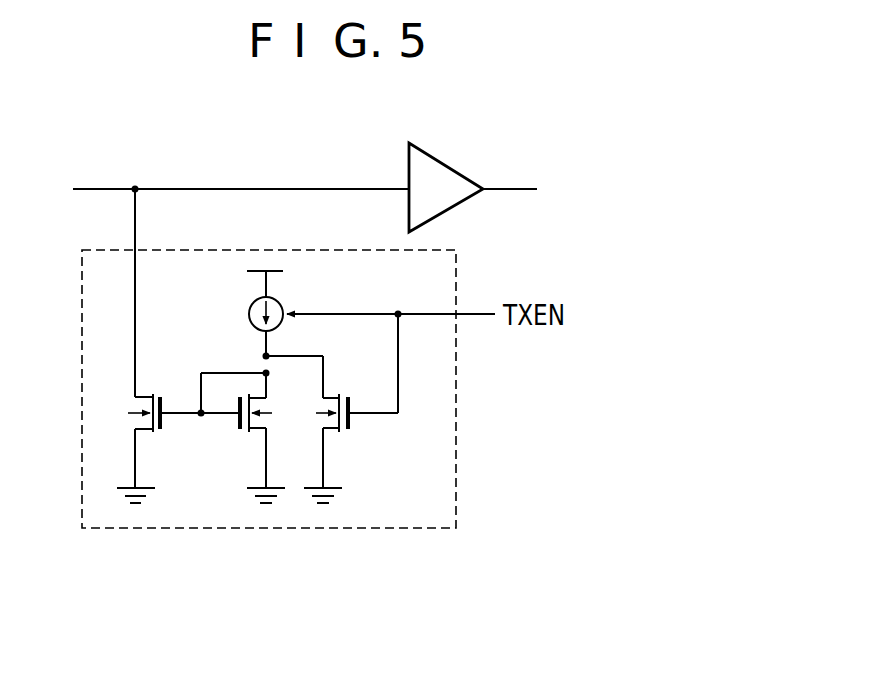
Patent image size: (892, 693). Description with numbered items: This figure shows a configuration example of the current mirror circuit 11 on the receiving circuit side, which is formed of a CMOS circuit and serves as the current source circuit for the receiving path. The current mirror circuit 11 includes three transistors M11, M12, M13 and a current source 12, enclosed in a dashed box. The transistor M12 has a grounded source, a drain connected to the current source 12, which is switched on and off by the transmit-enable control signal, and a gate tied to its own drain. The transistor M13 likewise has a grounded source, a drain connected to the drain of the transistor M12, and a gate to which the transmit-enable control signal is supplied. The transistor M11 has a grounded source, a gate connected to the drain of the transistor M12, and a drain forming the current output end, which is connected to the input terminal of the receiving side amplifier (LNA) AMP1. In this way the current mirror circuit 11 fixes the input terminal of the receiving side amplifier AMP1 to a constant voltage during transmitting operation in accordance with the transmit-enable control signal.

The receiving side amplifier (LNA) AMP1 is at (442, 157).
The current source 12 is at (281, 301).
The transistor M11 is at (160, 390).
The transistor M12 is at (243, 434).
The transistor M13 is at (346, 434).
The current mirror circuit 11 is at (351, 530).